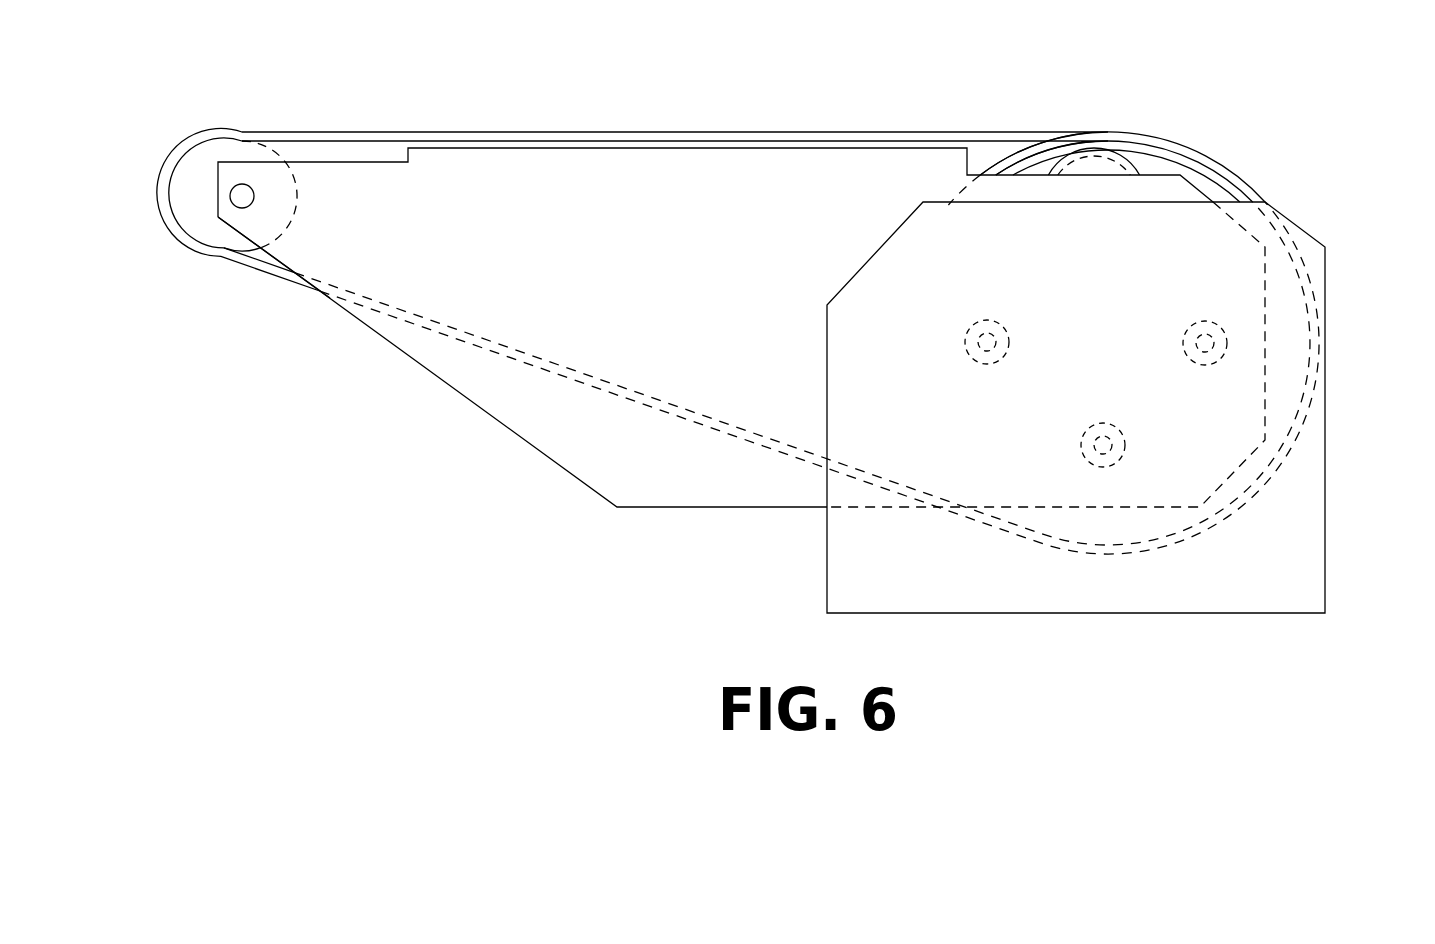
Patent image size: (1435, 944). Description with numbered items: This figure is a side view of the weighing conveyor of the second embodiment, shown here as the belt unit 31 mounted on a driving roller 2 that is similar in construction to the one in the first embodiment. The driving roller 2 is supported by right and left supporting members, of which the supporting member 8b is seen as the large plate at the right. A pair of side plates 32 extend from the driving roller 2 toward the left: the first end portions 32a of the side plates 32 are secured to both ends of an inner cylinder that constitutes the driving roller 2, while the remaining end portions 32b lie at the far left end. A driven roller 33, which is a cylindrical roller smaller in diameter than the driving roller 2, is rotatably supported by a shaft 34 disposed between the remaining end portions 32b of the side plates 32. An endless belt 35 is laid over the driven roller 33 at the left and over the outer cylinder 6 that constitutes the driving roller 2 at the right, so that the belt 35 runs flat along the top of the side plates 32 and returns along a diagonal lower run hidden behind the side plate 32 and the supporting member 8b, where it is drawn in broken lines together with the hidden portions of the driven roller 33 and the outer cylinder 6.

The belt drive unit 31 is at (707, 83).
The side plate 32 is at (745, 212).
The first end portion 32a is at (1133, 188).
The remaining end portion 32b is at (305, 245).
The driven roller 33 is at (252, 150).
The shaft 34 is at (240, 196).
The endless belt 35 is at (312, 140).
The outer cylinder 6 is at (1012, 157).
The driving roller 2 is at (1280, 192).
The supporting member 8b is at (1313, 532).